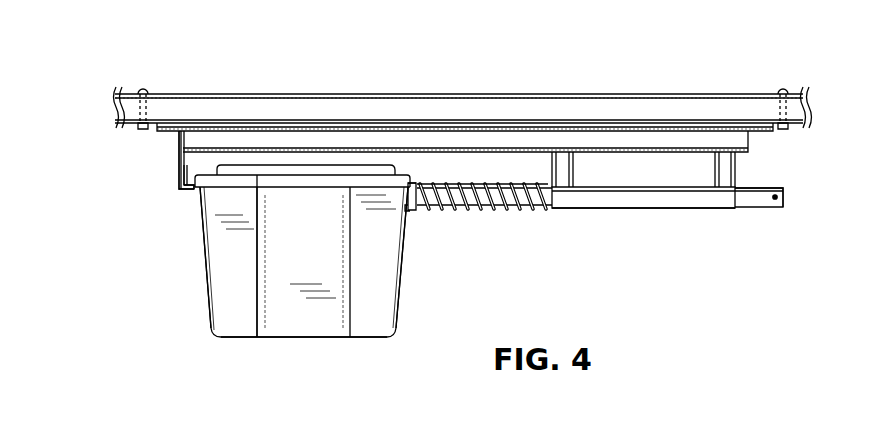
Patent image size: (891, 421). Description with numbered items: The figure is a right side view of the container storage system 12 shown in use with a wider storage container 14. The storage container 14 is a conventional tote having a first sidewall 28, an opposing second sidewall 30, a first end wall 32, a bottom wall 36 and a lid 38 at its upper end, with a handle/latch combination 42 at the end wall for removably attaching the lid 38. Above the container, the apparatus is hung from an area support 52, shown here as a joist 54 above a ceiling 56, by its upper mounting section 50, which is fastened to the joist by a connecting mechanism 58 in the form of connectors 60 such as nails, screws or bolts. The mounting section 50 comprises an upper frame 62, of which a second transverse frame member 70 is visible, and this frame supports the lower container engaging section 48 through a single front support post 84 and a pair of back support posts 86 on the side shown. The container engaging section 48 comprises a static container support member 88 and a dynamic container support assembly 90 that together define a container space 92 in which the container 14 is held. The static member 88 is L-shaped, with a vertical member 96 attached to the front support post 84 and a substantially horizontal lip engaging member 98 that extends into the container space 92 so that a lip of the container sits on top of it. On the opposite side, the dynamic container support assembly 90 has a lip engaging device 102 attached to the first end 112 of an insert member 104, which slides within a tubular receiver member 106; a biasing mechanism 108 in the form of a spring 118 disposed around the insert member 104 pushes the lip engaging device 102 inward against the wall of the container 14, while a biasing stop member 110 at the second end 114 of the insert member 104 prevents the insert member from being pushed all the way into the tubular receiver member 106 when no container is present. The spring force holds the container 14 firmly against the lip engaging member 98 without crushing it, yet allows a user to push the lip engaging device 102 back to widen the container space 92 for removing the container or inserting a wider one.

The container storage system 12 is at (800, 67).
The storage container 14 is at (233, 302).
The first sidewall 28 is at (208, 287).
The second sidewall 30 is at (398, 287).
The first end wall 32 is at (382, 313).
The bottom wall 36 is at (266, 338).
The lid 38 is at (282, 172).
The handle/latch combination 42 is at (265, 193).
The container engaging section 48 is at (794, 190).
The mounting section 50 is at (150, 144).
The area support 52 is at (354, 92).
The joist 54 is at (128, 92).
The ceiling 56 is at (503, 129).
The connecting mechanism 58 is at (774, 114).
The connector 60 is at (788, 113).
The upper frame 62 is at (569, 127).
The second transverse frame member 70 is at (668, 146).
The front support post 84 is at (185, 155).
The back support post 86 is at (563, 168).
The static container support member 88 is at (165, 191).
The dynamic container support assembly 90 is at (607, 218).
The container space 92 is at (468, 168).
The vertical member 96 is at (183, 178).
The lip engaging member 98 is at (195, 188).
The lip engaging device 102 is at (409, 203).
The insert member 104 is at (747, 200).
The tubular receiver member 106 is at (676, 198).
The biasing mechanism 108 is at (517, 218).
The biasing stop member 110 is at (777, 197).
The first end 112 is at (418, 180).
The second end 114 is at (783, 216).
The spring 118 is at (470, 207).